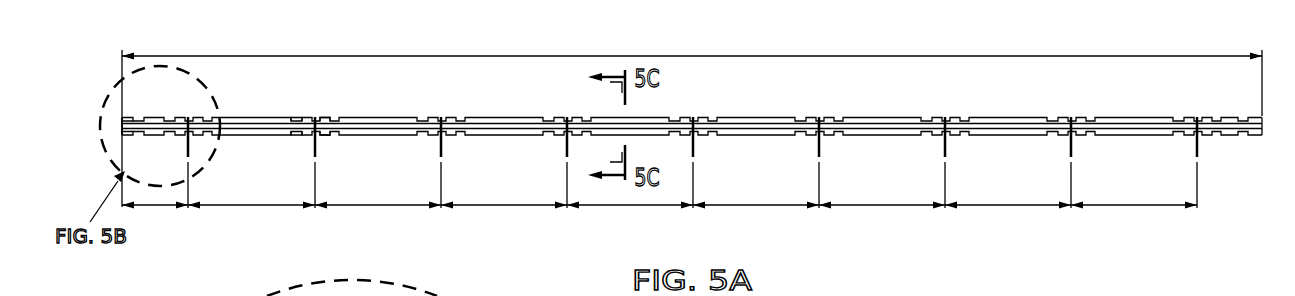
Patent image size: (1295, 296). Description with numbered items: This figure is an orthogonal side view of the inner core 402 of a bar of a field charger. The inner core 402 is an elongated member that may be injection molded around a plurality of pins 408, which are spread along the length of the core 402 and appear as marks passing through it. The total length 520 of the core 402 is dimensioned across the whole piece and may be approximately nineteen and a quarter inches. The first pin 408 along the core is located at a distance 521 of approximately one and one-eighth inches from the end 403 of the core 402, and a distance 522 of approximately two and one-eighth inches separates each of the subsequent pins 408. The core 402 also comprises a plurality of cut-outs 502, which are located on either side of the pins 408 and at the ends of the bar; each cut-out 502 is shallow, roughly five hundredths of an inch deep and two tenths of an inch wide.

The inner core 402 is at (253, 143).
The end of the core 403 is at (122, 127).
The pins 408 is at (315, 147).
The cut-outs 502 is at (294, 110).
The total length 520 is at (692, 55).
The distance 521 is at (155, 207).
The distance 522 is at (248, 207).